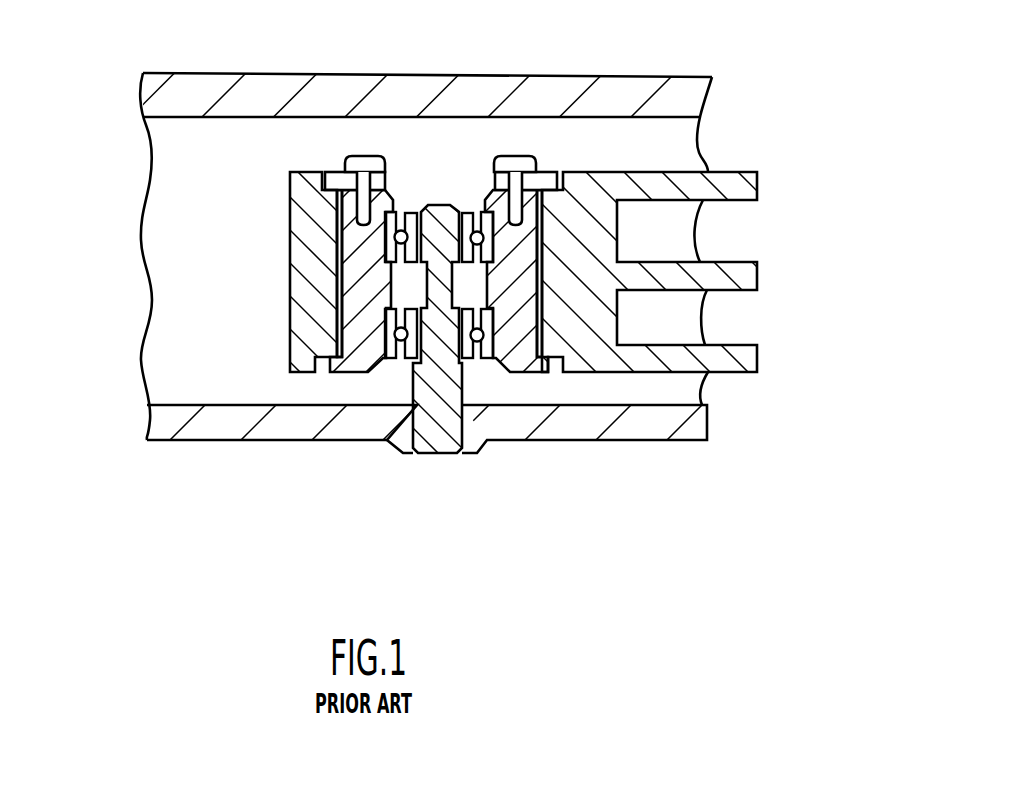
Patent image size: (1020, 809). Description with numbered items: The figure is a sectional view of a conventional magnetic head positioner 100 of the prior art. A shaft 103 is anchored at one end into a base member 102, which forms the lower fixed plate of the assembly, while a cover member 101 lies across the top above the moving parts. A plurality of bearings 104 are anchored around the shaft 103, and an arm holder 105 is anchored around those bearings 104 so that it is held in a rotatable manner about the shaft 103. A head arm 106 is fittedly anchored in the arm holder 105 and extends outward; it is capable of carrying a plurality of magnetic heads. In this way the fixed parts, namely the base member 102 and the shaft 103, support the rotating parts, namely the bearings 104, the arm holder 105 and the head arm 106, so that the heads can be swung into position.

The magnetic head positioner 100 is at (278, 221).
The cover member 101 is at (680, 77).
The base member 102 is at (250, 440).
The shaft 103 is at (443, 453).
The bearings 104 is at (486, 358).
The arm holder 105 is at (533, 377).
The head arm 106 is at (725, 172).